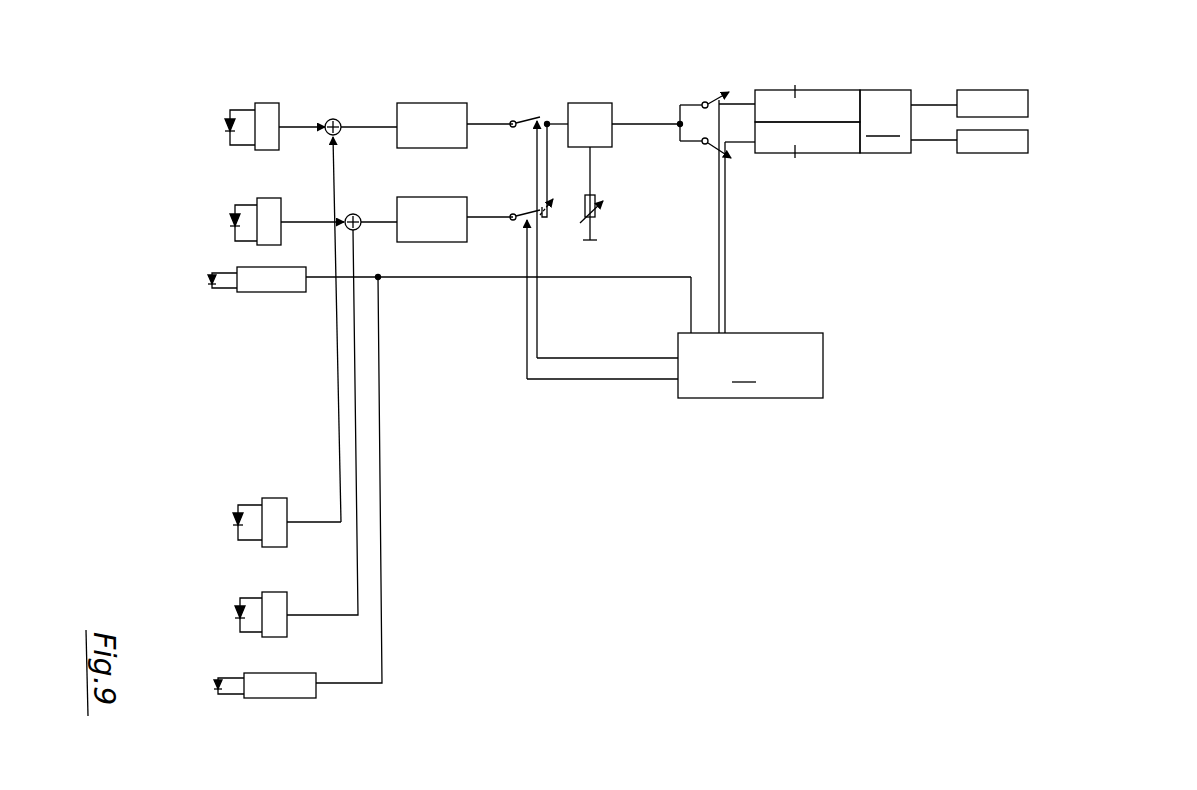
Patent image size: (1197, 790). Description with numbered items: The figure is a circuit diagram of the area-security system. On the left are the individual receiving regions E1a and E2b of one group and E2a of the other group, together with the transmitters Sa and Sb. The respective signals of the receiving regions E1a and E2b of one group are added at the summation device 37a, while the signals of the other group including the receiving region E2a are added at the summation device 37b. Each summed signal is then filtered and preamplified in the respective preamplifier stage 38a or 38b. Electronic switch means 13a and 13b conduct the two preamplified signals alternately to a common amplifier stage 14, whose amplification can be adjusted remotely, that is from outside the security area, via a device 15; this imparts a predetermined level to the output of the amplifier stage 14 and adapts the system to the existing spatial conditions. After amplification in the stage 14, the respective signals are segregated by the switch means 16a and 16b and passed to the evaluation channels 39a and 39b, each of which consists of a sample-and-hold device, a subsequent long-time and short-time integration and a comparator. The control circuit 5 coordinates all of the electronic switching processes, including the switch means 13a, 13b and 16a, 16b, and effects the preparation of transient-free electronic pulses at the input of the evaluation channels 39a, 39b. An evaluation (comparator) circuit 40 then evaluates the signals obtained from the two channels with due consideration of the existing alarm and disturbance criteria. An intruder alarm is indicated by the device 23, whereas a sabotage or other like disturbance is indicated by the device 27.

The receiving region E1a is at (242, 113).
The receiving region E2a is at (254, 416).
The receiving region E2b is at (226, 503).
The transmitter (emitter) a Sa is at (424, 288).
The transmitter (emitter) b Sb is at (269, 496).
The summation device 37a is at (346, 105).
The summation device 37b is at (363, 196).
The preamplifier stage 38a is at (493, 58).
The preamplifier stage 38b is at (510, 270).
The electronic switch means 13a is at (557, 103).
The electronic switch means 13b is at (560, 195).
The common amplifier stage 14 is at (621, 58).
The device for remote adjustment of amplification 15 is at (600, 200).
The switch 16a is at (713, 84).
The switch 16b is at (733, 163).
The evaluation channel 39a is at (855, 58).
The evaluation channel 39b is at (852, 218).
The evaluation (comparator) circuit 40 is at (992, 56).
The sabotage indicating device 27 is at (990, 98).
The alarm indicating device 23 is at (993, 141).
The control circuit 5 is at (868, 439).